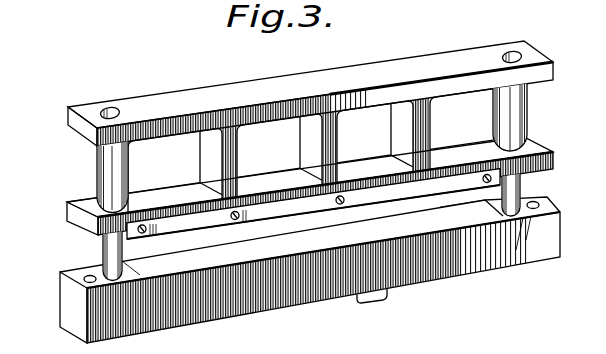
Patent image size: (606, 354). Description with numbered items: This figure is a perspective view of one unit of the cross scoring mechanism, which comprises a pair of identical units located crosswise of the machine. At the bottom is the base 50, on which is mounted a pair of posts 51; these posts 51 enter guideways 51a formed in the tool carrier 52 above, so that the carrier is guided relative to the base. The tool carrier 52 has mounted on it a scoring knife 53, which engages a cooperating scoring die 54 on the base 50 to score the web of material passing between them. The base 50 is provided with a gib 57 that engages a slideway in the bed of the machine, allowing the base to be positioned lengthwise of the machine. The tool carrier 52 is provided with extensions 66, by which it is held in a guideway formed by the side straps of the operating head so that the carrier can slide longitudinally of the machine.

The base 50 is at (281, 300).
The post 51 is at (108, 249).
The guideway 51a is at (545, 99).
The tool carrier 52 is at (347, 72).
The scoring knife 53 is at (267, 210).
The scoring die 54 is at (470, 218).
The gib 57 is at (377, 300).
The extension 66 is at (68, 117).